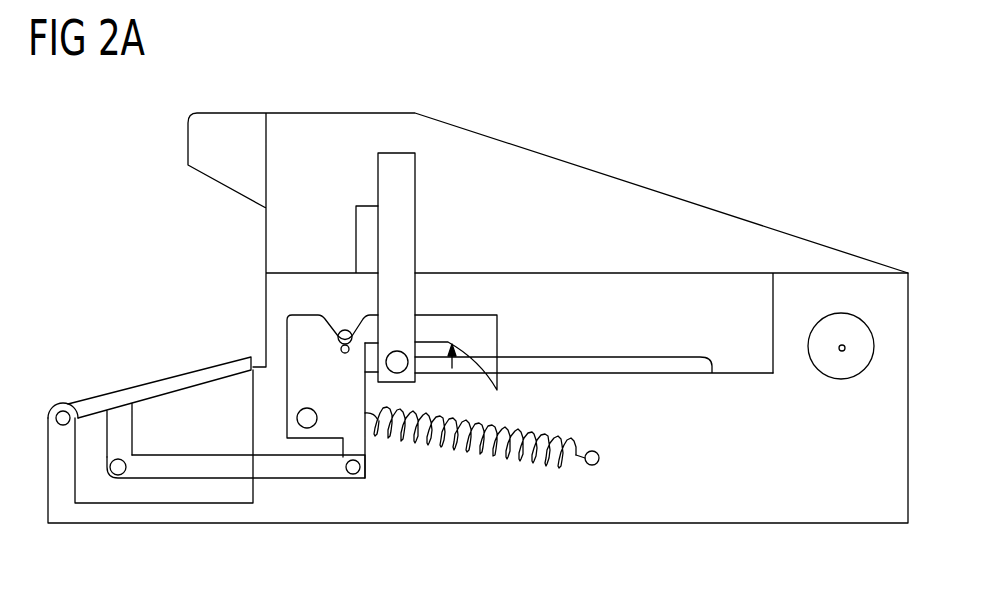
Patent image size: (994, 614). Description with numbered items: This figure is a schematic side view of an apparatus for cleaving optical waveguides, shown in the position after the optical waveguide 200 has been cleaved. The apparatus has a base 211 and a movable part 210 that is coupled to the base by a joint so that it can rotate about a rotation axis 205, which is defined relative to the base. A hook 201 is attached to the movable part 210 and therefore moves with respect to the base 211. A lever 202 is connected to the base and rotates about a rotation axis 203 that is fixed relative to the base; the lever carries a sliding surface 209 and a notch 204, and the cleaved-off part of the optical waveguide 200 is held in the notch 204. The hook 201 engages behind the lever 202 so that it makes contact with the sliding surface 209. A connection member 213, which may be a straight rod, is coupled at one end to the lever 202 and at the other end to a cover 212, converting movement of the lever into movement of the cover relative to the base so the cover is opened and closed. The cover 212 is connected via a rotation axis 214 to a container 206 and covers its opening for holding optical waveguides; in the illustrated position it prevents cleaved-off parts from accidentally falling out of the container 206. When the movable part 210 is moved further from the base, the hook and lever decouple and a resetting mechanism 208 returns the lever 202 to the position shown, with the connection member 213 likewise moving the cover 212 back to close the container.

The optical waveguide 200 is at (347, 330).
The hook 201 is at (400, 287).
The lever 202 is at (482, 335).
The rotation axis 203 is at (310, 409).
The notch 204 is at (335, 330).
The rotation axis 205 is at (842, 351).
The container 206 is at (93, 488).
The resetting mechanism 208 is at (438, 445).
The sliding surface 209 is at (452, 368).
The movable part 210 is at (338, 128).
The base 211 is at (765, 510).
The cover 212 is at (158, 388).
The connection member 213 is at (180, 465).
The rotation axis 214 is at (61, 411).